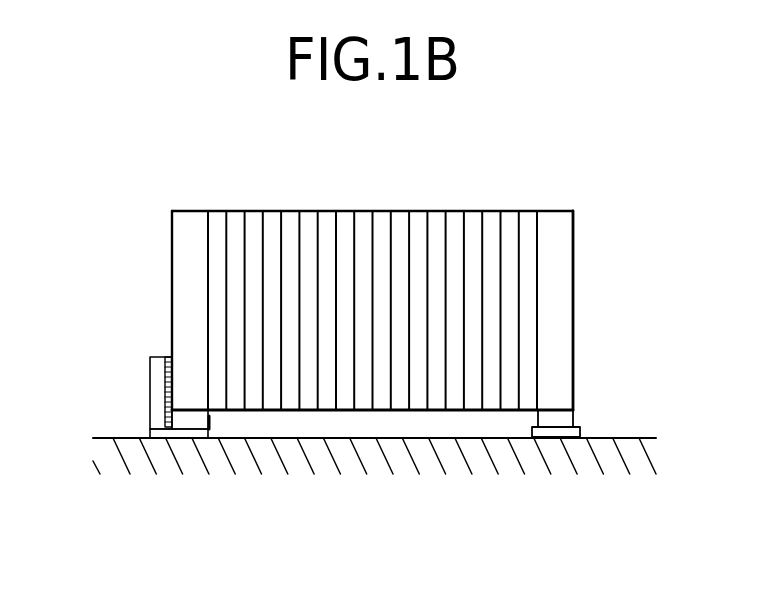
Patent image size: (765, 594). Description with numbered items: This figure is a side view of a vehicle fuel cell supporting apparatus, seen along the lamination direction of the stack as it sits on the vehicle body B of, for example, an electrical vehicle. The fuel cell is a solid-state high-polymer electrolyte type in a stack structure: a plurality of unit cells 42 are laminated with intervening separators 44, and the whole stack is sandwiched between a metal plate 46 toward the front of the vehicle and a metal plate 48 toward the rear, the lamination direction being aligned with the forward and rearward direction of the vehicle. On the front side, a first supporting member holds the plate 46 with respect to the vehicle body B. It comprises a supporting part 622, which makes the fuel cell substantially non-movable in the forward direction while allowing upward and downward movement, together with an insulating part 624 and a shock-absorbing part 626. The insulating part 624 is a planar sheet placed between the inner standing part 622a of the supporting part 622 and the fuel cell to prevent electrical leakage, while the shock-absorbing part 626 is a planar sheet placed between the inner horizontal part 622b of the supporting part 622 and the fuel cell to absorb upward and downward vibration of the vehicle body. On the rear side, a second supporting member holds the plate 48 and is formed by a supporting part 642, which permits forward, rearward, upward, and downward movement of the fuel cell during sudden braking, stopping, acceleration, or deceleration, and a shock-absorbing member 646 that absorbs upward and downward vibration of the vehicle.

The unit cell 42 is at (307, 210).
The separator 44 is at (353, 411).
The metal plate 46 is at (187, 243).
The metal plate 48 is at (562, 267).
The supporting part 622 is at (135, 440).
The inner standing part 622a is at (167, 382).
The inner horizontal part 622b is at (183, 438).
The insulating part 624 is at (167, 357).
The shock-absorbing part 626 is at (210, 420).
The supporting part 642 is at (555, 438).
The shock-absorbing member 646 is at (574, 415).
The vehicle body B is at (413, 463).